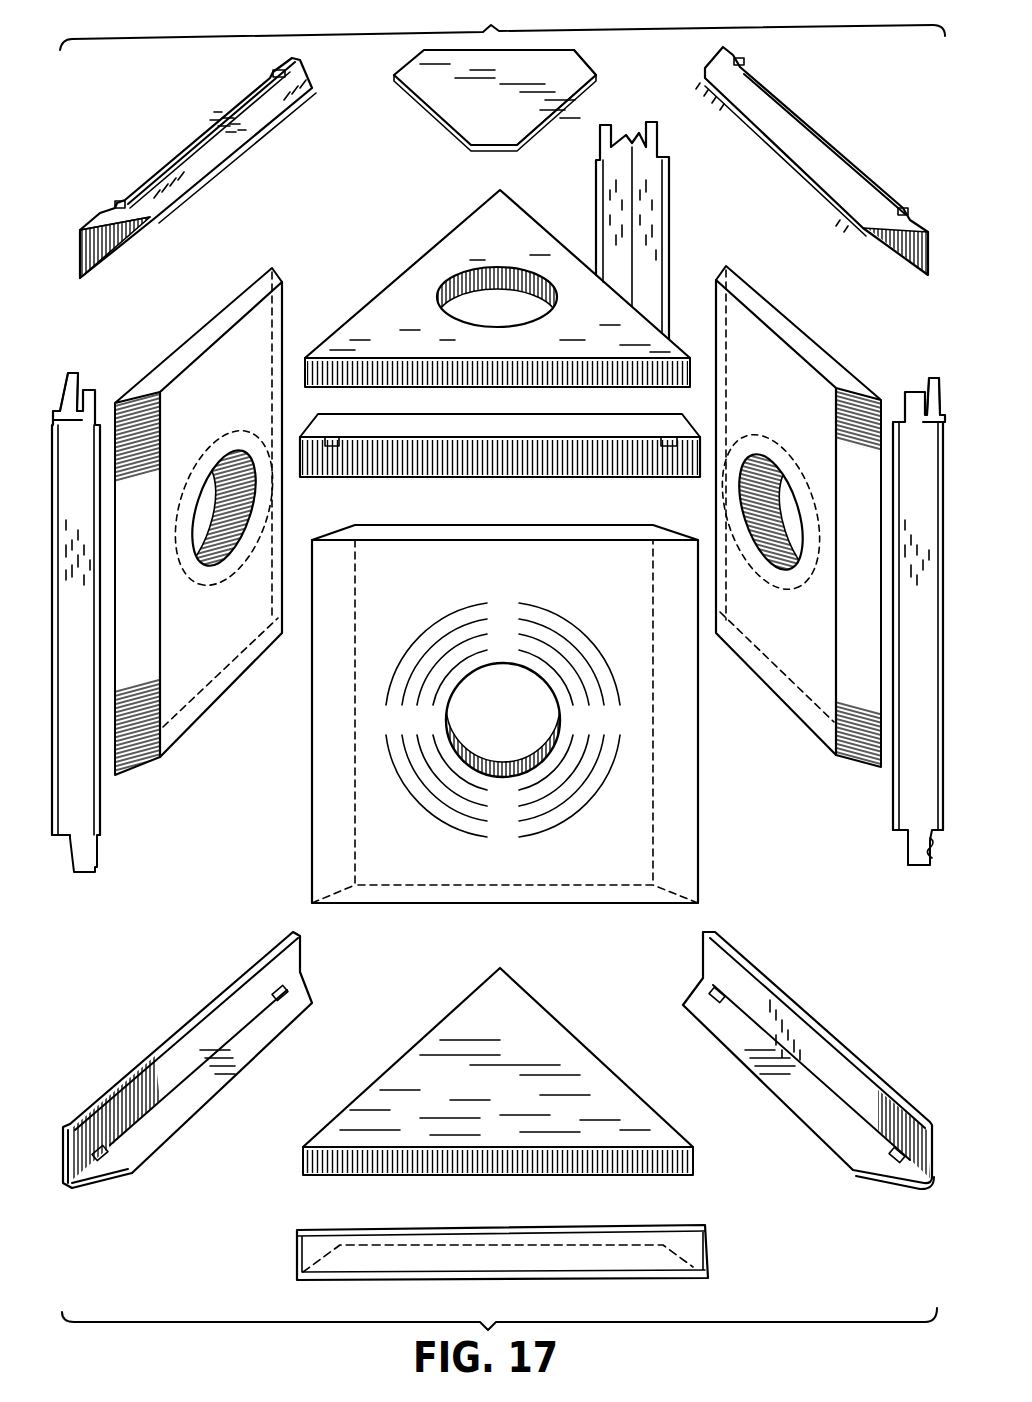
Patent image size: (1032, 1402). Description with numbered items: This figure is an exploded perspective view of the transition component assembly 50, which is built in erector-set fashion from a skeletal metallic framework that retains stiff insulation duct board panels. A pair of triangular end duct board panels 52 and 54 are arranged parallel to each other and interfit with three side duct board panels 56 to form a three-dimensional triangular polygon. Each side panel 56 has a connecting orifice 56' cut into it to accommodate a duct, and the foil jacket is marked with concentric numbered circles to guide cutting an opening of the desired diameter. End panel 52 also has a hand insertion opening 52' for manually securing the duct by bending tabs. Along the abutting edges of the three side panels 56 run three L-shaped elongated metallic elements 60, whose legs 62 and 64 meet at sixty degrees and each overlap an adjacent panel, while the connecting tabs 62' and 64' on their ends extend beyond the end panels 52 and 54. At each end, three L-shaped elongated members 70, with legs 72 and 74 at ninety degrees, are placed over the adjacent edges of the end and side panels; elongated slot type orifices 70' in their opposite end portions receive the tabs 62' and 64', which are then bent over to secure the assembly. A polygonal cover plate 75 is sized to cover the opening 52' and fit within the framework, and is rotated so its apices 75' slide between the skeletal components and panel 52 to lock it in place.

The transition component assembly 50 is at (502, 665).
The end duct board panel 52 is at (497, 288).
The hand insertion opening 52' is at (469, 277).
The end duct board panel 54 is at (481, 1015).
The side duct board panel 56 is at (498, 607).
The connecting orifice 56' is at (497, 523).
The L-shaped elongated metallic element 60 is at (673, 213).
The leg 62 is at (577, 219).
The connecting tab 62' is at (500, 258).
The leg 64 is at (686, 246).
The connecting tab 64' is at (791, 506).
The L-shaped elongated member 70 is at (498, 663).
The elongated slot type orifice 70' is at (506, 600).
The leg 72 is at (188, 172).
The leg 74 is at (110, 247).
The cover plate 75 is at (476, 100).
The apex 75' is at (583, 90).